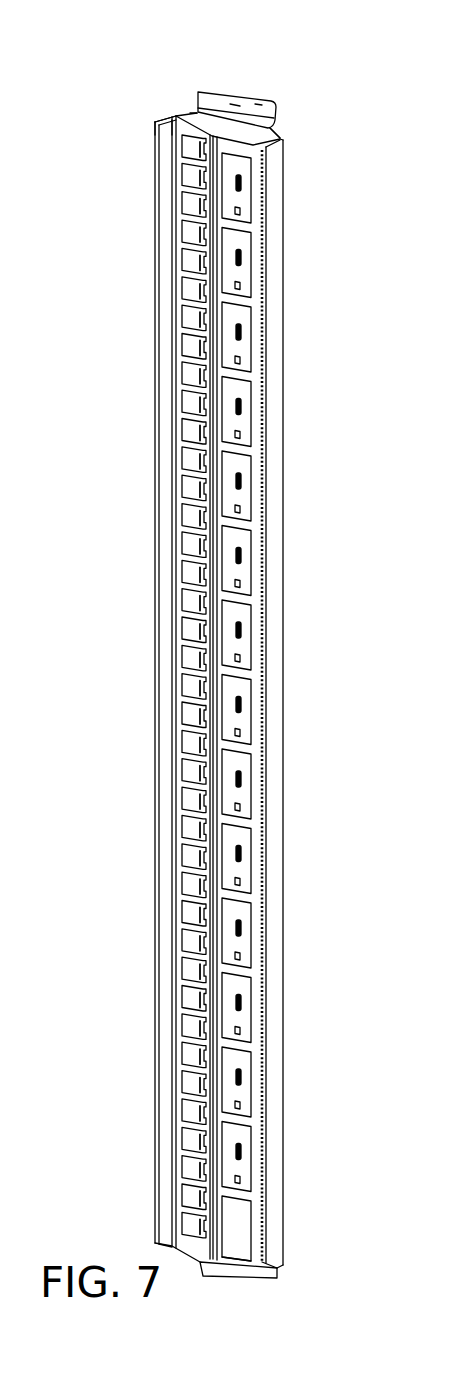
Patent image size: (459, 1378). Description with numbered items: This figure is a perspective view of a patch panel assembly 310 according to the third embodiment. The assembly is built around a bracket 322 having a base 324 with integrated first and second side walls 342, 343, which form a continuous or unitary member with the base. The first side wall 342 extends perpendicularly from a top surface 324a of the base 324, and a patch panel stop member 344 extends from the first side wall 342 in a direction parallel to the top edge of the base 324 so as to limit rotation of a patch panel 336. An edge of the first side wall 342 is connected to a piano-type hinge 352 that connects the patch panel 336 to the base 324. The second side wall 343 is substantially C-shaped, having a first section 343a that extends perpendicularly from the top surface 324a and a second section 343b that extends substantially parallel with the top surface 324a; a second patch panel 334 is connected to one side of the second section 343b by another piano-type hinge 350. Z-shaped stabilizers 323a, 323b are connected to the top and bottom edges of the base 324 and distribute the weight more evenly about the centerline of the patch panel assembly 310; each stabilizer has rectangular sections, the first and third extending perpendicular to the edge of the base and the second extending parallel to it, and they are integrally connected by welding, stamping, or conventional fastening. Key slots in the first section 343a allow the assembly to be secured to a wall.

The patch panel assembly 310 is at (292, 255).
The bracket 322 is at (236, 110).
The Z-shaped stabilizer 323a is at (220, 92).
The Z-shaped stabilizer 323b is at (280, 1271).
The base 324 is at (190, 117).
The top surface 324a is at (258, 105).
The patch panel 334 is at (182, 668).
The patch panel 336 is at (254, 452).
The first side wall 342 is at (274, 133).
The second side wall 343 is at (160, 112).
The first section 343a is at (157, 117).
The second section 343b is at (171, 128).
The patch panel stop member 344 is at (274, 146).
The piano-type hinge 350 is at (178, 329).
The piano-type hinge 352 is at (264, 343).